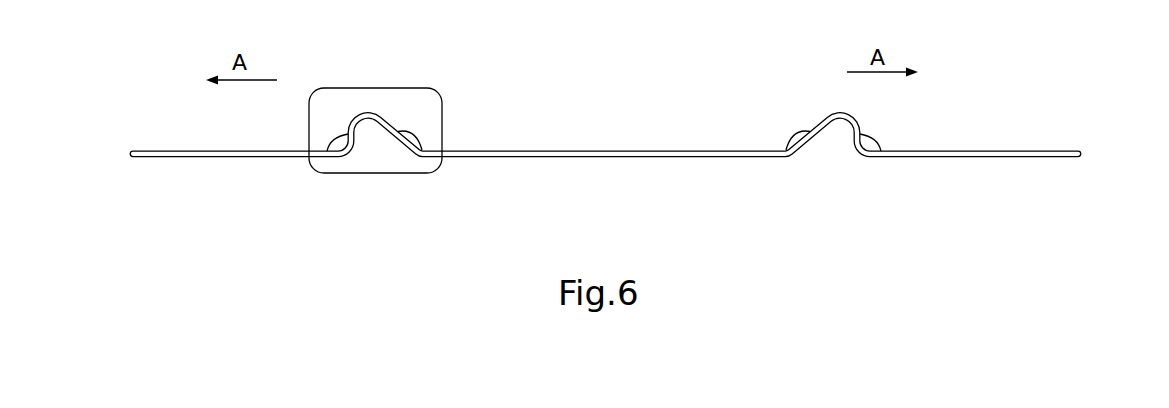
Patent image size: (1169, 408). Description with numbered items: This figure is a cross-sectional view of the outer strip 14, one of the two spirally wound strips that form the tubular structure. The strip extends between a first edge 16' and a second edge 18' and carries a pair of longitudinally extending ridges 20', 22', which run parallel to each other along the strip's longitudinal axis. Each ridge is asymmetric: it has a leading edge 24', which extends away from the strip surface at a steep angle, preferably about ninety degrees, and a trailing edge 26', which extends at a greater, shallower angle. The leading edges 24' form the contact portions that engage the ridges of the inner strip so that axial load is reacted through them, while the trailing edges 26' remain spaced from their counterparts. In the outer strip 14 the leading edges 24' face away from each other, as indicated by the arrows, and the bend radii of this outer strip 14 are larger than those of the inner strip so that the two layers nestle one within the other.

The outer strip 14 is at (565, 157).
The first edge 16' is at (1013, 185).
The second edge 18' is at (190, 177).
The ridge 20' is at (824, 91).
The ridge 22' is at (384, 92).
The leading edge 24' is at (599, 176).
The trailing edge 26' is at (604, 175).